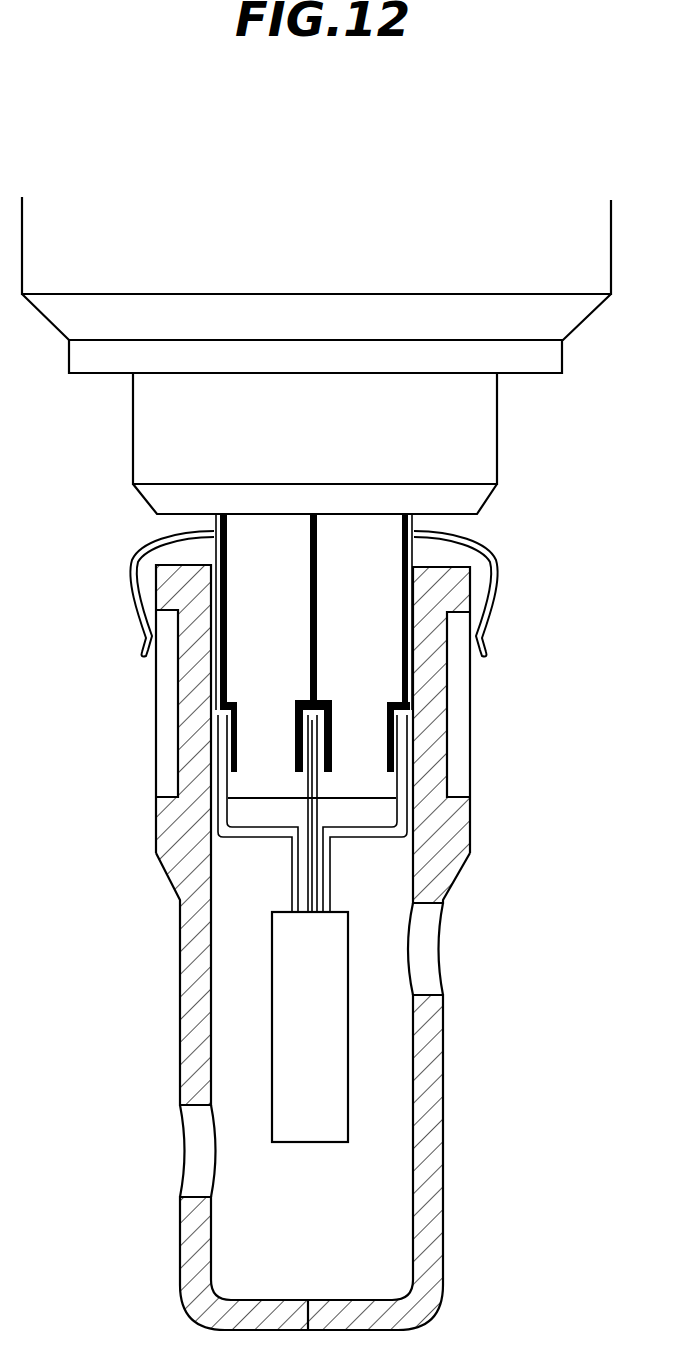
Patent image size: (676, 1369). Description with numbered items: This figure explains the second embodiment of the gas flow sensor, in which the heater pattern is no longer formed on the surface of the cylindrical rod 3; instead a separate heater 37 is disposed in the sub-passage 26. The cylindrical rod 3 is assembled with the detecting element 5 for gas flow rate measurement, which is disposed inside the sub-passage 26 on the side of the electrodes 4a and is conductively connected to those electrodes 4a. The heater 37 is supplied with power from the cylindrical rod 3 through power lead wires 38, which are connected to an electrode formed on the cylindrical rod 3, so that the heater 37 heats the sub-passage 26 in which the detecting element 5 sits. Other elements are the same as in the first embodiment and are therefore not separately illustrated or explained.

The cylindrical rod 3 is at (362, 742).
The electrodes 4a is at (317, 655).
The detecting element 5 is at (290, 1042).
The sub-passage 26 is at (443, 1148).
The heater 37 is at (155, 742).
The power lead wires 38 is at (131, 582).